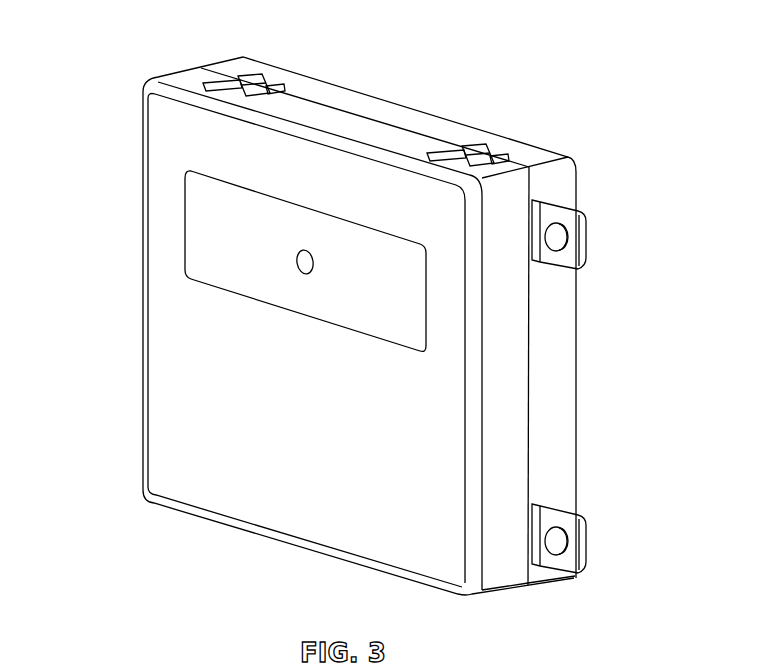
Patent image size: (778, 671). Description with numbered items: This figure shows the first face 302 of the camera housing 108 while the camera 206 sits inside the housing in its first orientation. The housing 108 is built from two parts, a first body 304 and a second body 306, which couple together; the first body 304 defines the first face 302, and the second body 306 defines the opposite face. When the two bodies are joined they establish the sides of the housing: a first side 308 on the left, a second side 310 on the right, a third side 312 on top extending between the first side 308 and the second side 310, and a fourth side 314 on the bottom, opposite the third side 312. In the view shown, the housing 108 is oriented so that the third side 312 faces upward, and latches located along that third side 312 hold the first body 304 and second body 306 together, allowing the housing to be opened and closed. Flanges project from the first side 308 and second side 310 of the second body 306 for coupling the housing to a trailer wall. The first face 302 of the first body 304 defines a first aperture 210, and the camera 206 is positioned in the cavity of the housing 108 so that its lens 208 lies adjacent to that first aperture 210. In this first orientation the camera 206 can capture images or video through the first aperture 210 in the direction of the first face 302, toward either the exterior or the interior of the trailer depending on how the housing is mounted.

The housing 108 is at (207, 43).
The camera 206 is at (207, 245).
The lens 208 is at (303, 268).
The first aperture 210 is at (183, 165).
The first face 302 is at (167, 412).
The first body 304 is at (503, 567).
The second body 306 is at (536, 573).
The first side 308 is at (167, 67).
The second side 310 is at (558, 393).
The third side 312 is at (362, 112).
The fourth side 314 is at (420, 588).